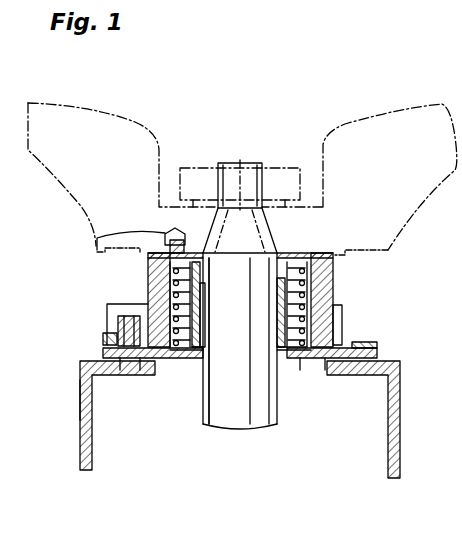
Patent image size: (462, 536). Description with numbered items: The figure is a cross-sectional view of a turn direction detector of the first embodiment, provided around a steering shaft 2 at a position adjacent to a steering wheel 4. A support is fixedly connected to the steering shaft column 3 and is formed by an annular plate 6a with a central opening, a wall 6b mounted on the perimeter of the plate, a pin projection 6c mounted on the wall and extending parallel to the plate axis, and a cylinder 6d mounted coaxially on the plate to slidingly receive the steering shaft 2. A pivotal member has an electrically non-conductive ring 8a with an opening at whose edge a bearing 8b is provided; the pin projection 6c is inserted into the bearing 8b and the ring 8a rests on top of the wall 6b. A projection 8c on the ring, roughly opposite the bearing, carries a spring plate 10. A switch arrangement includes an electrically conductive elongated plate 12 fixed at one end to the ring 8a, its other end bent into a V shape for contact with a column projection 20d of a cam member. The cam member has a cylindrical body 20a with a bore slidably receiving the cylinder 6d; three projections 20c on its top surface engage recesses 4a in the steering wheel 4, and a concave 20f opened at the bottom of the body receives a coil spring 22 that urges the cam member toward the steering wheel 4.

The steering shaft 2 is at (255, 408).
The steering shaft column 3 is at (80, 452).
The steering wheel 4 is at (380, 130).
The recesses 4a is at (167, 232).
The annular plate 6a is at (174, 370).
The wall 6b is at (377, 347).
The pin projection 6c is at (82, 400).
The cylinder 6d is at (210, 424).
The ring 8a is at (103, 348).
The bearing 8b is at (118, 328).
The projection 8c is at (343, 308).
The spring plate 10 is at (343, 330).
The elongated plate 12 is at (107, 310).
The cylindrical body 20a is at (336, 266).
The projections 20c is at (97, 239).
The column projection 20d is at (148, 265).
The concave 20f is at (312, 256).
The coil spring 22 is at (302, 372).